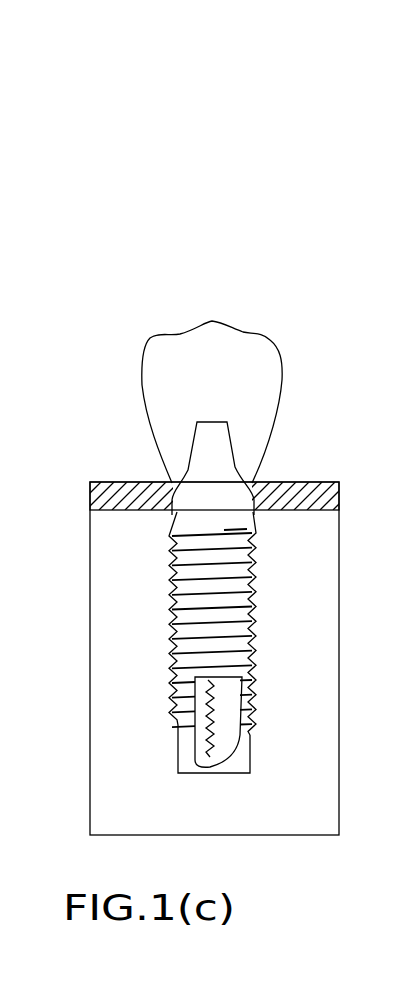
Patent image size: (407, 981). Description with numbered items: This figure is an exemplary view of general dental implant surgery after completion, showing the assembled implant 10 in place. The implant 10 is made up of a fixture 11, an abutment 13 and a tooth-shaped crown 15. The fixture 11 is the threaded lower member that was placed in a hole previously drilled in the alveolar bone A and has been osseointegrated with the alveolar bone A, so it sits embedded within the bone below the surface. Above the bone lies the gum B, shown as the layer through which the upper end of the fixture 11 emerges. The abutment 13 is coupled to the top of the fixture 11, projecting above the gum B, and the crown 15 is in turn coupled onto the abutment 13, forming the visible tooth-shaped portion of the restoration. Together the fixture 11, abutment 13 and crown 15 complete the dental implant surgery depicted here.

The implant 10 is at (191, 396).
The fixture 11 is at (173, 588).
The abutment 13 is at (240, 451).
The crown 15 is at (258, 366).
The alveolar bone A is at (117, 672).
The gum B is at (107, 481).